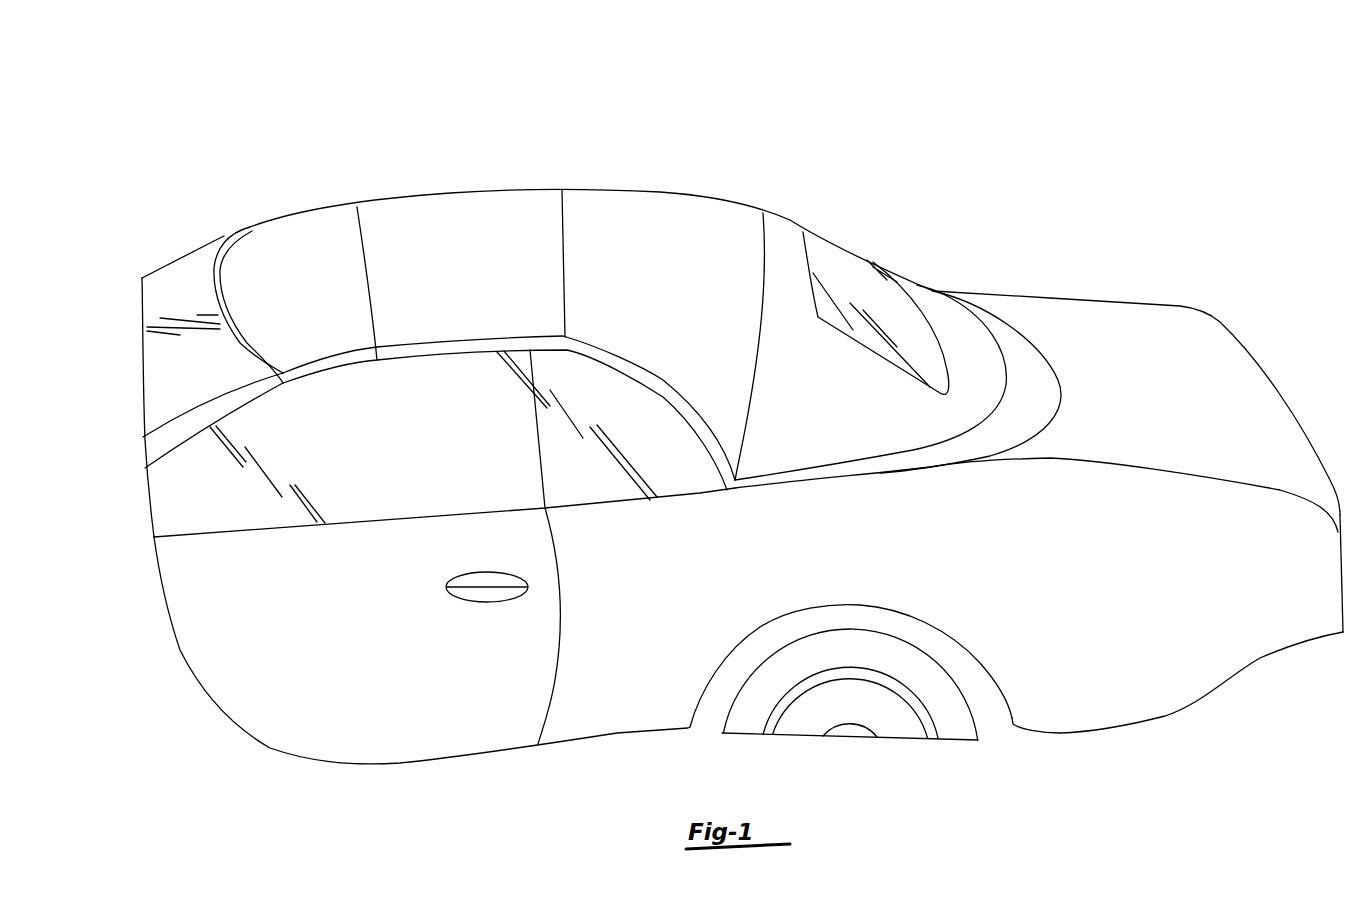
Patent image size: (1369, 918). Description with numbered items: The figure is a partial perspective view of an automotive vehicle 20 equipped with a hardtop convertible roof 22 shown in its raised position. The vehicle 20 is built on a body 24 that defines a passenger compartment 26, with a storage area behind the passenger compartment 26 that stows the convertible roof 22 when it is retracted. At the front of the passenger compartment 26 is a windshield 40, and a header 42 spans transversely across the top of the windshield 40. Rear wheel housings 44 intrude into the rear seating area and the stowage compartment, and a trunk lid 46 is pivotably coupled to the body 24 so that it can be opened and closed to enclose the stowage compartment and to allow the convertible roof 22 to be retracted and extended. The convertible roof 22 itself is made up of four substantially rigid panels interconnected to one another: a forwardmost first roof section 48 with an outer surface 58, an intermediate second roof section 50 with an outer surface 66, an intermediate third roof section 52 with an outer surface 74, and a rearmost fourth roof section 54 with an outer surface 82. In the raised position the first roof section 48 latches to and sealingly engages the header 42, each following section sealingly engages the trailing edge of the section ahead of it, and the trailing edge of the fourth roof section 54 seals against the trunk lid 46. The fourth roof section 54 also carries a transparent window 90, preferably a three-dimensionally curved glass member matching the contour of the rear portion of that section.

The automotive vehicle 20 is at (837, 133).
The hardtop convertible roof 22 is at (630, 167).
The body 24 is at (617, 718).
The passenger compartment 26 is at (442, 493).
The windshield 40 is at (170, 275).
The header 42 is at (212, 247).
The rear wheel housings 44 is at (980, 643).
The trunk lid 46 is at (1115, 323).
The first roof section 48 is at (329, 292).
The second roof section 50 is at (501, 266).
The third roof section 52 is at (676, 268).
The fourth roof section 54 is at (838, 428).
The outer surface 58 is at (320, 217).
The outer surface 66 is at (435, 203).
The outer surface 74 is at (600, 197).
The outer surface 82 is at (783, 233).
The transparent window 90 is at (887, 287).